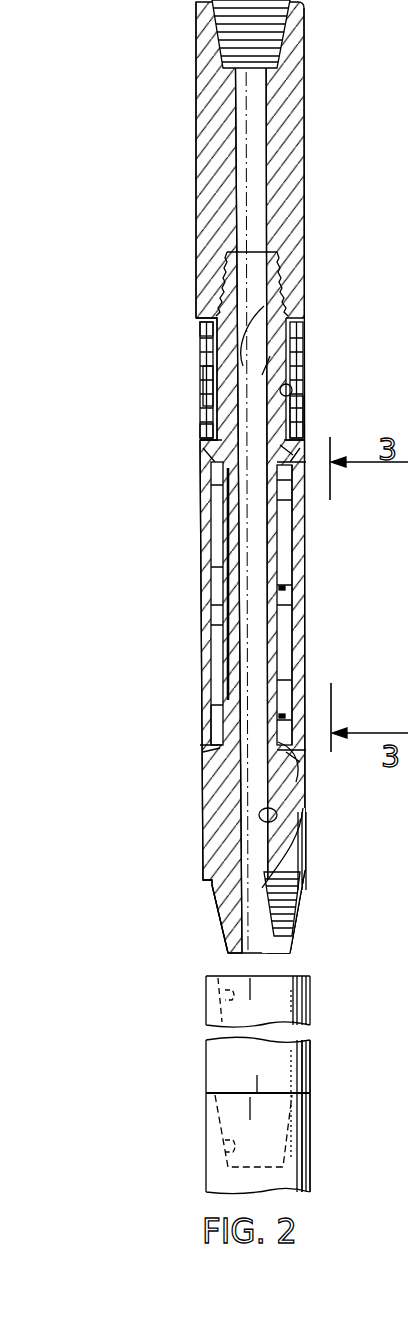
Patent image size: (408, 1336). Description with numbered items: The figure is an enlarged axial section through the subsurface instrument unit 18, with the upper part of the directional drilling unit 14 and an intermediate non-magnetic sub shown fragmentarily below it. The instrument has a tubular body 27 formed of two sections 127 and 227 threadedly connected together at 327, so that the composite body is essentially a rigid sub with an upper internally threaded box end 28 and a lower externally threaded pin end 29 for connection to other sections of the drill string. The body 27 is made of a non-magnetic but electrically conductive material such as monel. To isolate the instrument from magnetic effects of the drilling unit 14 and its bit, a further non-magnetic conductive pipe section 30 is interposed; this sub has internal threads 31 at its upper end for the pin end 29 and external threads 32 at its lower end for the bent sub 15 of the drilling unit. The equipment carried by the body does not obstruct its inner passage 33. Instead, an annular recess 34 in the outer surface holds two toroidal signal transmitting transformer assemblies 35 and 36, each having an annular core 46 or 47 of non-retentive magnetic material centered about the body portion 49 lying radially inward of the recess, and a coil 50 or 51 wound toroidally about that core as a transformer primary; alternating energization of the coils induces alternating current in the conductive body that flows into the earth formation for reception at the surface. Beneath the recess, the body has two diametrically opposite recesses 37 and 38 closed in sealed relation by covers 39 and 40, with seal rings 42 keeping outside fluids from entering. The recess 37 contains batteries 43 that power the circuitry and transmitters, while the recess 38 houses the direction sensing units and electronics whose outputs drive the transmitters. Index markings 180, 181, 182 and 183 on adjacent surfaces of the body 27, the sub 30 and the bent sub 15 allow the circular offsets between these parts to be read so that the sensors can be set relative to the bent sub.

The directional drilling unit 14 is at (324, 1160).
The bent sub 15 is at (292, 1178).
The subsurface instrument unit 18 is at (142, 490).
The tubular body 27 is at (196, 838).
The box end 28 is at (225, 41).
The pin end 29 is at (218, 920).
The non-magnetic electrically conductive pipe section 30 is at (197, 1059).
The internal threads 31 is at (225, 993).
The external threads 32 is at (227, 1152).
The inner passage 33 is at (300, 825).
The annular recess 34 is at (303, 372).
The signal transmitting transformer assembly 35 is at (308, 343).
The signal transmitting transformer assembly 36 is at (301, 405).
The recess 37 is at (225, 622).
The recess 38 is at (295, 620).
The cover 39 is at (208, 705).
The cover 40 is at (307, 655).
The seal rings 42 is at (307, 778).
The batteries 43 is at (220, 605).
The annular core 46 is at (200, 355).
The annular core 47 is at (200, 400).
The portion of the body 49 is at (305, 300).
The coil 50 is at (200, 335).
The coil 51 is at (200, 419).
The body section 127 is at (293, 97).
The index marking 180 is at (290, 882).
The index marking 181 is at (252, 990).
The index marking 182 is at (258, 1090).
The index marking 183 is at (250, 1106).
The body section 227 is at (210, 790).
The threaded connection 327 is at (300, 262).